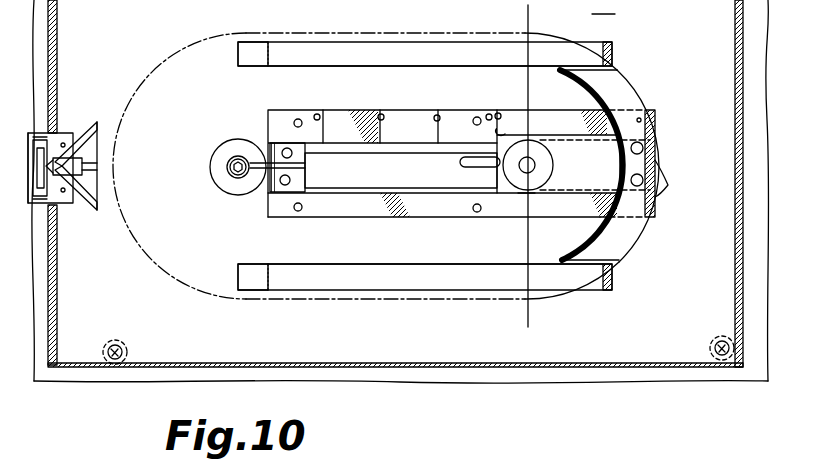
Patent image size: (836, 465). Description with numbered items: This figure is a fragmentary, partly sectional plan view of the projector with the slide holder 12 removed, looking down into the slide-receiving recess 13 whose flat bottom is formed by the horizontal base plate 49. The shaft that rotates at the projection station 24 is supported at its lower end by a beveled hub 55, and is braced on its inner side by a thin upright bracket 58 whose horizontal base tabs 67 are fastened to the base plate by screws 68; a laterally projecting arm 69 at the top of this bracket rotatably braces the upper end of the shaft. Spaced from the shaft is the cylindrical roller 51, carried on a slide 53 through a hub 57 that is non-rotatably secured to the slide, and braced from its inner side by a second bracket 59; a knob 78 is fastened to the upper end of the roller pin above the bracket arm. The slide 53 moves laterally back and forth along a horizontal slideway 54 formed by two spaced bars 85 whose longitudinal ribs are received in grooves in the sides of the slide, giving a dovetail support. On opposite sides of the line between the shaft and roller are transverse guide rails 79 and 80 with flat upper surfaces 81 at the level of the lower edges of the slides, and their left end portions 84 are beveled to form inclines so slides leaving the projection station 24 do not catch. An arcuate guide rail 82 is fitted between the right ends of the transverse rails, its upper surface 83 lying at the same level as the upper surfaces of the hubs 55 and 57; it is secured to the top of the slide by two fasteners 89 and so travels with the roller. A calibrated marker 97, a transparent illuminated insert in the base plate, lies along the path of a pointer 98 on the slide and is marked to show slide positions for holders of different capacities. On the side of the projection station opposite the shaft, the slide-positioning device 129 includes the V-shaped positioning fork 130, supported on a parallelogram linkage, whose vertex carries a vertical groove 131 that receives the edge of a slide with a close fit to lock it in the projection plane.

The slide holder 12 is at (528, 5).
The slide-receiving recess 13 is at (733, 254).
The projection station 24 is at (133, 86).
The base plate 49 is at (603, 7).
The roller 51 is at (536, 165).
The slide 53 is at (661, 153).
The slideway 54 is at (668, 185).
The hub 55 is at (221, 186).
The hub 57 is at (522, 193).
The bracket 58 is at (277, 158).
The bracket 59 is at (497, 176).
The base tabs 67 is at (272, 150).
The screws 68 is at (291, 150).
The arm 69 is at (262, 160).
The knob 78 is at (462, 171).
The transverse guide rail 79 is at (300, 46).
The transverse guide rail 80 is at (366, 266).
The upper surfaces 81 is at (427, 66).
The arcuate guide rail 82 is at (628, 80).
The upper surface 83 is at (624, 243).
The left end portions 84 is at (260, 50).
The bars 85 is at (345, 113).
The fasteners 89 is at (643, 177).
The calibrated marker 97 is at (450, 122).
The pointer 98 is at (498, 127).
The slide-positioning device 129 is at (71, 125).
The positioning fork 130 is at (84, 206).
The vertical groove 131 is at (82, 164).